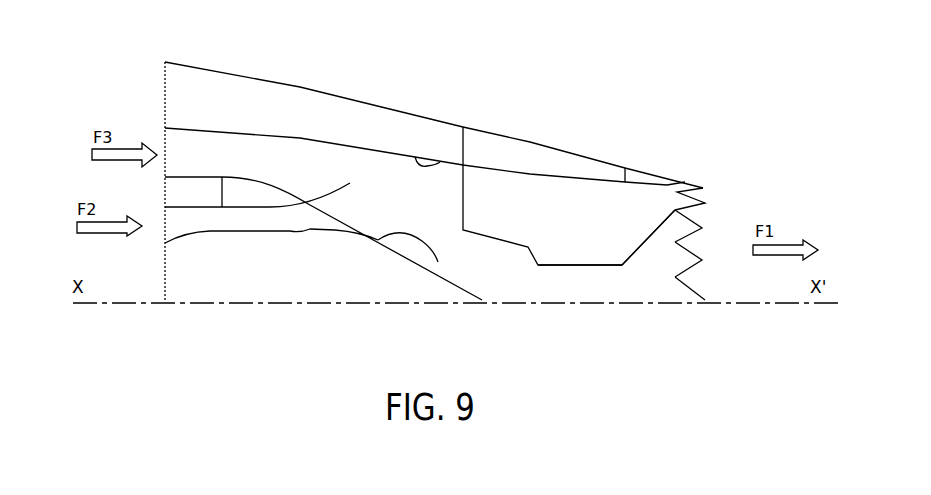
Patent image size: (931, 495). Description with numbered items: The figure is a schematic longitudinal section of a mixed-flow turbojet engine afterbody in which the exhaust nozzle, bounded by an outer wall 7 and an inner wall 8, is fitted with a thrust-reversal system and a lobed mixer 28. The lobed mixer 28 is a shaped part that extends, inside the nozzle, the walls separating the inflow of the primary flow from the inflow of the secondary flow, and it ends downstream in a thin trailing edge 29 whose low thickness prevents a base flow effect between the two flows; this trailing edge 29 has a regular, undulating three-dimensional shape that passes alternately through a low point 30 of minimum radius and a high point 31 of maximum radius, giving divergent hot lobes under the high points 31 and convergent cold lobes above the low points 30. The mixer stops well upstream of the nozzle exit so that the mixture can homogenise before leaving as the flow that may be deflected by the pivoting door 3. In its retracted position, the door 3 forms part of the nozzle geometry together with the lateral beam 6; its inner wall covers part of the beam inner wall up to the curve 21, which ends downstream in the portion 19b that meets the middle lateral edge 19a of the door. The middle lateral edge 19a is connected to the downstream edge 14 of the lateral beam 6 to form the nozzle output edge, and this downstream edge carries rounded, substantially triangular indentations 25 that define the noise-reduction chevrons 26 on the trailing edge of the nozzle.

The tilting door 3 is at (548, 158).
The lateral beam 6 is at (620, 287).
The outer wall 7 is at (435, 118).
The inner wall 8 is at (415, 157).
The downstream edge of lateral beam 14 is at (702, 250).
The middle lateral edge 19a is at (690, 183).
The lateral downstream edge portion 19b is at (640, 248).
The curve 21 is at (583, 265).
The indentation 25 is at (698, 292).
The noise-reduction chevron 26 is at (693, 223).
The lobed mixer 28 is at (250, 193).
The trailing edge 29 is at (378, 240).
The low point 30 is at (450, 280).
The high point 31 is at (378, 240).